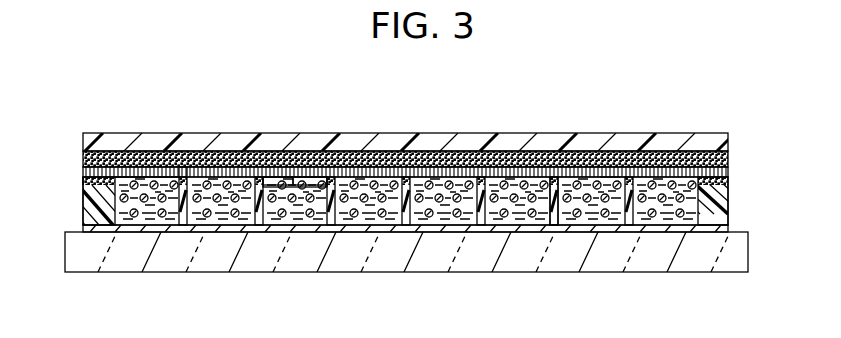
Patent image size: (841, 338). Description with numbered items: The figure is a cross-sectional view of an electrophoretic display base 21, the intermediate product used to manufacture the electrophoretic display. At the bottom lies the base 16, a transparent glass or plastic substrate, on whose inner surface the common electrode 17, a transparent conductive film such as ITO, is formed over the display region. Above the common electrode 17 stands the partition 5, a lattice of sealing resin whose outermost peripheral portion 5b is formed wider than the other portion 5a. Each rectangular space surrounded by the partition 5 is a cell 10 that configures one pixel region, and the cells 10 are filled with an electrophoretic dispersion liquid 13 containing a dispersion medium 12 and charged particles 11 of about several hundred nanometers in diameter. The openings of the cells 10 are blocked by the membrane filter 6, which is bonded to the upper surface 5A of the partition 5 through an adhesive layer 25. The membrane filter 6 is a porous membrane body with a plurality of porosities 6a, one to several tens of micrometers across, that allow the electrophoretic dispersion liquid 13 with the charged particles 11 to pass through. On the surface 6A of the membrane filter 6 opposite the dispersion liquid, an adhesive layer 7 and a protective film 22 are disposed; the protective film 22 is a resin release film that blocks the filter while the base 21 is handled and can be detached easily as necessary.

The electrophoretic display base 21 is at (725, 85).
The protective film 22 is at (728, 143).
The adhesive layer 7 is at (728, 158).
The membrane filter 6 is at (728, 172).
The porosity 6a is at (158, 177).
The surface of the membrane filter 6A is at (203, 165).
The partition 5 is at (405, 201).
The other portion of the partition 5a is at (553, 205).
The outermost peripheral portion of the partition 5b is at (730, 205).
The upper surface of the partition 5A is at (110, 193).
The cell 10 is at (612, 171).
The charged particles 11 is at (300, 182).
The dispersion medium 12 is at (292, 182).
The electrophoretic dispersion liquid 13 is at (313, 92).
The common electrode 17 is at (728, 228).
The base 16 is at (737, 245).
The adhesive layer 25 is at (83, 179).